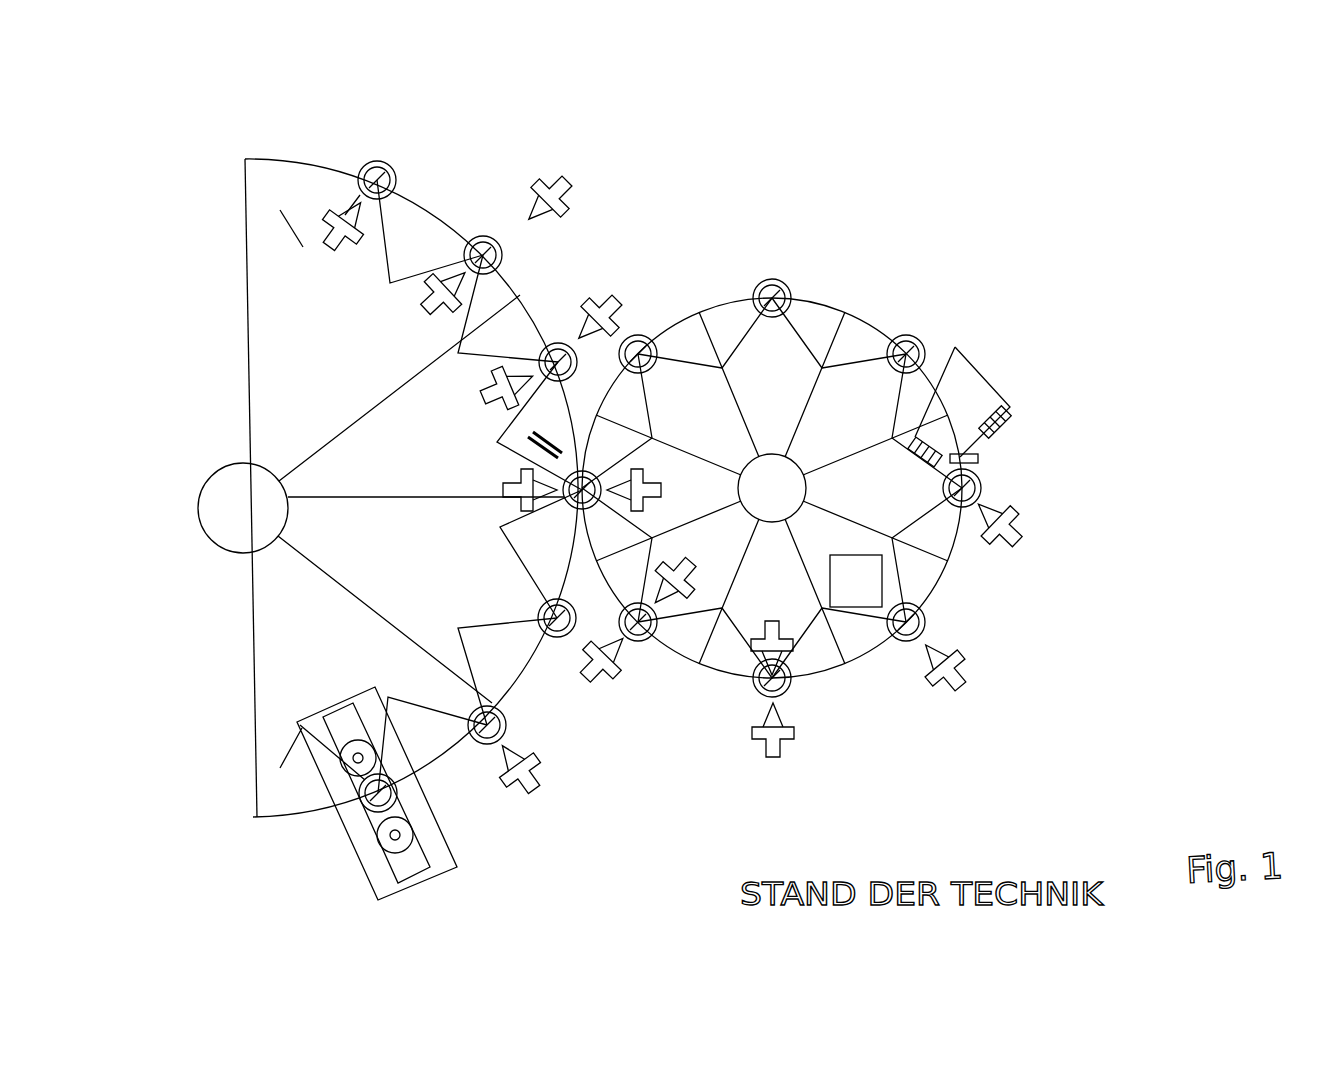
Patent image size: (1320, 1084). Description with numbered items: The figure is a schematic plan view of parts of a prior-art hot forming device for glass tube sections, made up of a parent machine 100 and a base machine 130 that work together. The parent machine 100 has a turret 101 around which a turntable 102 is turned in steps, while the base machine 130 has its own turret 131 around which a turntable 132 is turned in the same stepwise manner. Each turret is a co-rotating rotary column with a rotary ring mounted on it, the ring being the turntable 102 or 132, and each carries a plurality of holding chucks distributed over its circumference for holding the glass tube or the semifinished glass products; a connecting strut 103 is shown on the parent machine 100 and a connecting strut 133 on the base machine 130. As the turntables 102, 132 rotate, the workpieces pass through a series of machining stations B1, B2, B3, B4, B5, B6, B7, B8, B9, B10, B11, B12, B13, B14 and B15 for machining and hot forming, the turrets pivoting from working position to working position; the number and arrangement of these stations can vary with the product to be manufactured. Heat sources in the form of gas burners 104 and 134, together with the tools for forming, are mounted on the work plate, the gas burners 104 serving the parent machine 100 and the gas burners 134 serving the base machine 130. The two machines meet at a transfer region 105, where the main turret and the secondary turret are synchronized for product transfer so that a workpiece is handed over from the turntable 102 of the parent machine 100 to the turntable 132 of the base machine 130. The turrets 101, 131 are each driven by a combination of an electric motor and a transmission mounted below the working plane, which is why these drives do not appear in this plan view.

The parent machine 100 is at (217, 118).
The turret 101 is at (210, 475).
The turntable 102 is at (305, 158).
The connecting strut 103 is at (219, 488).
The gas burner 104 is at (540, 178).
The transfer region 105 is at (565, 515).
The base machine 130 is at (987, 184).
The turret 131 is at (808, 462).
The turntable 132 is at (880, 320).
The connecting strut 133 is at (808, 393).
The gas burner 134 is at (960, 665).
The machining station B1 is at (392, 222).
The machining station B2 is at (479, 299).
The machining station B3 is at (558, 200).
The machining station B4 is at (517, 416).
The machining station B5 is at (610, 326).
The machining station B6 is at (512, 490).
The machining station B7 is at (534, 662).
The machining station B8 is at (613, 657).
The machining station B9 is at (474, 753).
The machining station B10 is at (657, 490).
The machining station B11 is at (688, 577).
The machining station B12 is at (771, 721).
The machining station B13 is at (770, 637).
The machining station B14 is at (958, 654).
The machining station B15 is at (1001, 516).